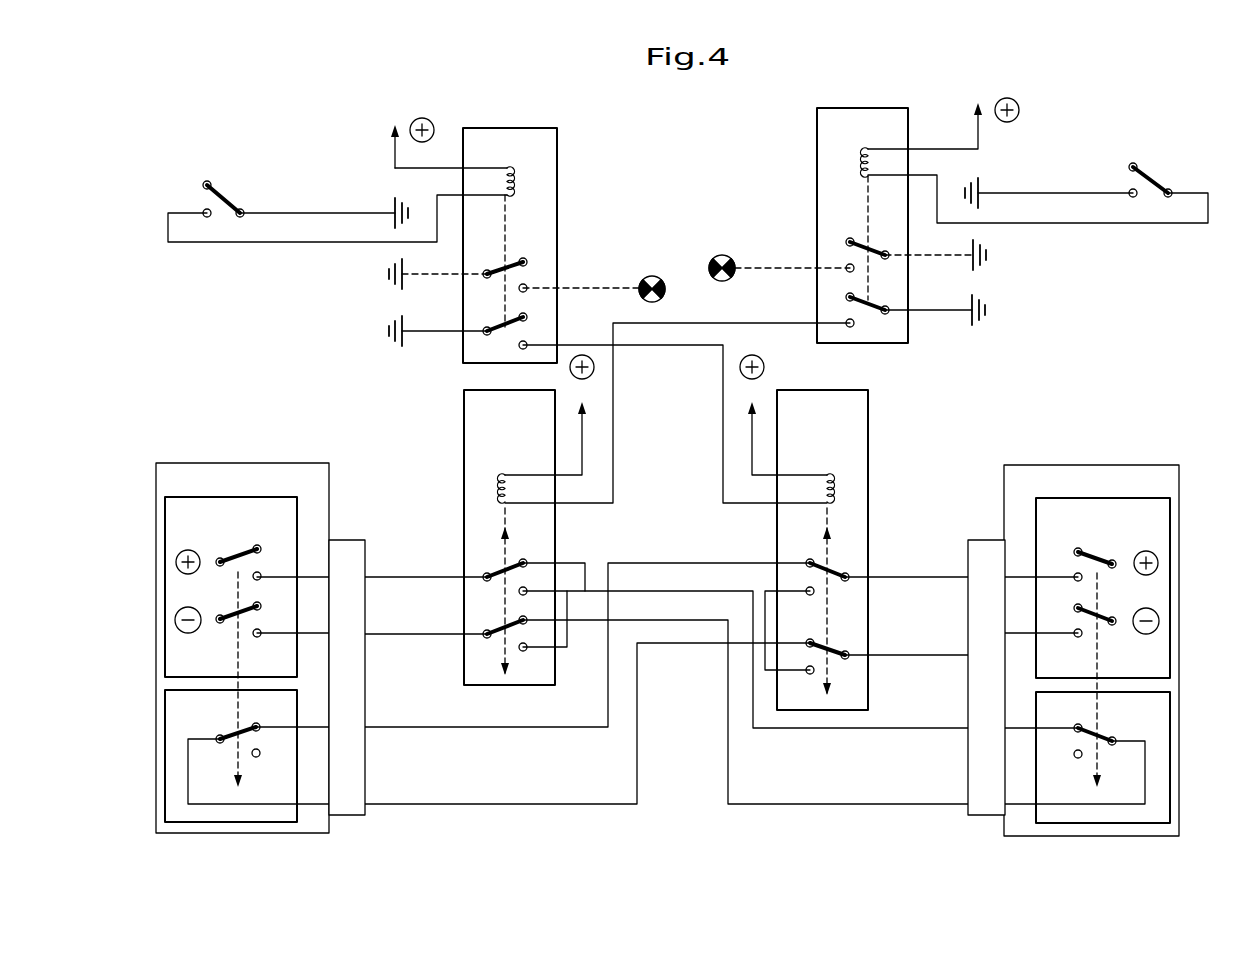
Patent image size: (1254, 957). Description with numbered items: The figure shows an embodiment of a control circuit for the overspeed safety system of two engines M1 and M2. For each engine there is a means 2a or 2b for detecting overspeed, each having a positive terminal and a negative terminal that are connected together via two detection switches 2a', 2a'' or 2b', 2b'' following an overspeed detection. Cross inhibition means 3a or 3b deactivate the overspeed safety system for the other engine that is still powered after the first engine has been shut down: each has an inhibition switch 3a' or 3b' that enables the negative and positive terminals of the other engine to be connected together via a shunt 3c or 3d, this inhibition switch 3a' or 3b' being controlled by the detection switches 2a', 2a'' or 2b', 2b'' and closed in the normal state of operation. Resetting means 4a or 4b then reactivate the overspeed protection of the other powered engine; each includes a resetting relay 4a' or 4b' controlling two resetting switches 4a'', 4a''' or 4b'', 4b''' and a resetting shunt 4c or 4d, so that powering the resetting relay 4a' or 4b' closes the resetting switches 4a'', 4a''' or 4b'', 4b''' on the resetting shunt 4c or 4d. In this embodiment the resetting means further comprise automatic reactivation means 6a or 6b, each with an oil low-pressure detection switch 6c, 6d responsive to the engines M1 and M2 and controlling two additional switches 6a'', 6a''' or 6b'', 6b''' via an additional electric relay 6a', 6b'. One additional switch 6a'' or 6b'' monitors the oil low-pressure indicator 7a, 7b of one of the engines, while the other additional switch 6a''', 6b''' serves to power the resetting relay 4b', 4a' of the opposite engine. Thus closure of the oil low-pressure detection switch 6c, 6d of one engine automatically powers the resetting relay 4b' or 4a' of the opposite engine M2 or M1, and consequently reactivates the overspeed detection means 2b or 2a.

The engine M1 is at (327, 160).
The engine M2 is at (1081, 132).
The oil low-pressure detection switch 6c is at (240, 207).
The oil low-pressure detection switch 6d is at (1152, 177).
The automatic reactivation means 6a is at (504, 217).
The additional electric relay 6a' is at (499, 134).
The additional switch 6a'' is at (503, 261).
The additional switch 6a''' is at (458, 320).
The automatic reactivation means 6b is at (980, 195).
The additional electric relay 6b' is at (870, 112).
The additional switch 6b'' is at (904, 229).
The additional switch 6b''' is at (915, 302).
The oil low-pressure indicator 7a is at (648, 276).
The oil low-pressure indicator 7b is at (722, 255).
The resetting means 4a is at (493, 520).
The resetting relay 4a' is at (467, 468).
The resetting switch 4a'' is at (468, 566).
The resetting switch 4a''' is at (467, 626).
The resetting means 4b is at (840, 532).
The resetting relay 4b' is at (861, 469).
The resetting switch 4b'' is at (870, 572).
The resetting switch 4b''' is at (873, 650).
The resetting shunt 4c is at (568, 637).
The resetting shunt 4d is at (770, 668).
The means for detecting overspeed 2a is at (187, 607).
The detection switch 2a' is at (234, 503).
The detection switch 2a'' is at (183, 611).
The means for detecting overspeed 2b is at (1136, 608).
The detection switch 2b' is at (1084, 505).
The detection switch 2b'' is at (1155, 609).
The cross inhibition means 3a is at (192, 756).
The inhibition switch 3a' is at (183, 734).
The cross inhibition means 3b is at (1137, 757).
The inhibition switch 3b' is at (1152, 739).
The shunt 3c is at (493, 820).
The shunt 3d is at (835, 820).